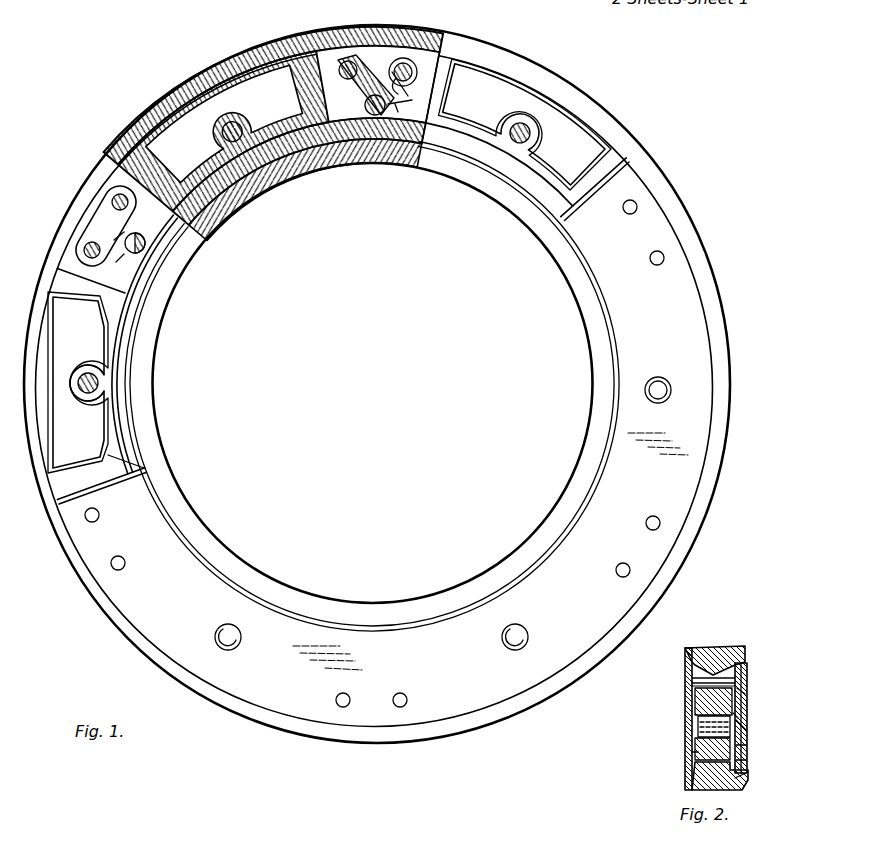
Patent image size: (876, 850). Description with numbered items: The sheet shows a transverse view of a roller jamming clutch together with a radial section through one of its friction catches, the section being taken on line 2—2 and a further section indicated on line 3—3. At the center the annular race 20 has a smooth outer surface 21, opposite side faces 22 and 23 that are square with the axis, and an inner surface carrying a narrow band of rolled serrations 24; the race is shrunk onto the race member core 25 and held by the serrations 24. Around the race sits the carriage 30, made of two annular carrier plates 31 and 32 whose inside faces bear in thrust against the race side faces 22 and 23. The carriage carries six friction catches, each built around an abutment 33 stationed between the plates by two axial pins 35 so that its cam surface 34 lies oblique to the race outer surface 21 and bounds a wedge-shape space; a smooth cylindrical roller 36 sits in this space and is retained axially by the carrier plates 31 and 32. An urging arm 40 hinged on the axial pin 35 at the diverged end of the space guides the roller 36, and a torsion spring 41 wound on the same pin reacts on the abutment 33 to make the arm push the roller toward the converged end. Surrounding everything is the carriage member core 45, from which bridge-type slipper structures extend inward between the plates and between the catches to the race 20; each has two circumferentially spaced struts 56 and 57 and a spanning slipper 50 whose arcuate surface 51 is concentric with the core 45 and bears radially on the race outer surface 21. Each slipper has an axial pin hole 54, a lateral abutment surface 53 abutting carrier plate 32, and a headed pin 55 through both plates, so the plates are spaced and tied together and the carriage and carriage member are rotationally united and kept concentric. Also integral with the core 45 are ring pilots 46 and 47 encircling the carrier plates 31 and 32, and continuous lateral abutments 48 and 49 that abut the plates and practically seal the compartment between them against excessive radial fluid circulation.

In FIG. 1, the section line 2— 2 is at (206, 288).
In FIG. 1, the section line 3— 3 is at (473, 205).
In FIG. 1, the annular race 20 is at (333, 162).
In FIG. 2, the annular race 20 is at (705, 752).
In FIG. 1, the race outer surface 21 is at (401, 152).
In FIG. 2, the race outer surface 21 is at (742, 760).
In FIG. 2, the race side face 22 is at (748, 745).
In FIG. 2, the race side face 23 is at (700, 750).
In FIG. 1, the rolled serrations 24 is at (258, 174).
In FIG. 2, the rolled serrations 24 is at (740, 778).
In FIG. 1, the race member core 25 is at (300, 172).
In FIG. 2, the race member core 25 is at (705, 778).
In FIG. 2, the carriage 30 is at (692, 684).
In FIG. 1, the carrier plate 31 is at (241, 95).
In FIG. 2, the carrier plate 31 is at (742, 725).
In FIG. 1, the carrier plate 32 is at (150, 596).
In FIG. 2, the carrier plate 32 is at (705, 725).
In FIG. 1, the abutment 33 is at (352, 91).
In FIG. 2, the abutment 33 is at (700, 700).
In FIG. 1, the abutment cam surface 34 is at (366, 108).
In FIG. 1, the axial pin 35 is at (100, 175).
In FIG. 2, the axial pin 35 is at (742, 692).
In FIG. 1, the roller 36 is at (129, 256).
In FIG. 2, the roller 36 is at (738, 715).
In FIG. 1, the urging arm 40 is at (399, 88).
In FIG. 1, the torsion spring 41 is at (401, 108).
In FIG. 1, the carriage member core 45 is at (233, 64).
In FIG. 2, the carriage member core 45 is at (722, 656).
In FIG. 2, the ring pilot 46 is at (748, 656).
In FIG. 1, the ring pilot 47 is at (72, 555).
In FIG. 2, the ring pilot 47 is at (686, 658).
In FIG. 2, the lateral abutment 48 is at (748, 668).
In FIG. 1, the lateral abutment 49 is at (57, 503).
In FIG. 2, the lateral abutment 49 is at (692, 675).
In FIG. 1, the slipper 50 is at (114, 344).
In FIG. 1, the arcuate surface 51 is at (117, 360).
In FIG. 1, the lateral abutment surface 53 is at (92, 368).
In FIG. 1, the axial pin hole 54 is at (79, 383).
In FIG. 1, the headed pin 55 is at (82, 395).
In FIG. 1, the strut 56 is at (92, 300).
In FIG. 1, the strut 57 is at (93, 462).